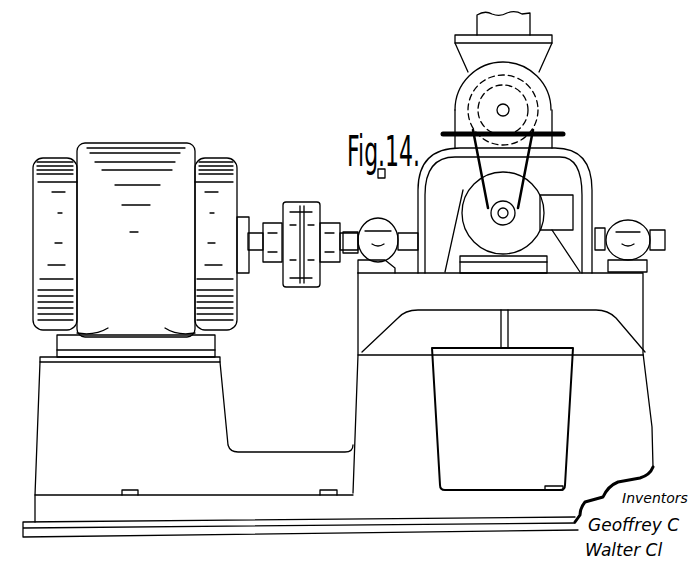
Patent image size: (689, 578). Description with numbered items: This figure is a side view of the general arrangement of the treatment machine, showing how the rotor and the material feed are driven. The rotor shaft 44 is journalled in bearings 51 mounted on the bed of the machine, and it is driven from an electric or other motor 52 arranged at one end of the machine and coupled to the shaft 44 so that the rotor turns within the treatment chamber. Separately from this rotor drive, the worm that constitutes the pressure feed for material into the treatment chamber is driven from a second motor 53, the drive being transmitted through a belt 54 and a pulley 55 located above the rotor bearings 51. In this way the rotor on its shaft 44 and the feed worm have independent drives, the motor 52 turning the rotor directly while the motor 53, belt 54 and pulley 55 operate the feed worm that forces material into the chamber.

The motor 52 is at (223, 202).
The shaft 44 is at (342, 234).
The bearings 51 is at (377, 234).
The motor 53 is at (530, 205).
The belt 54 is at (563, 133).
The pulley 55 is at (530, 108).